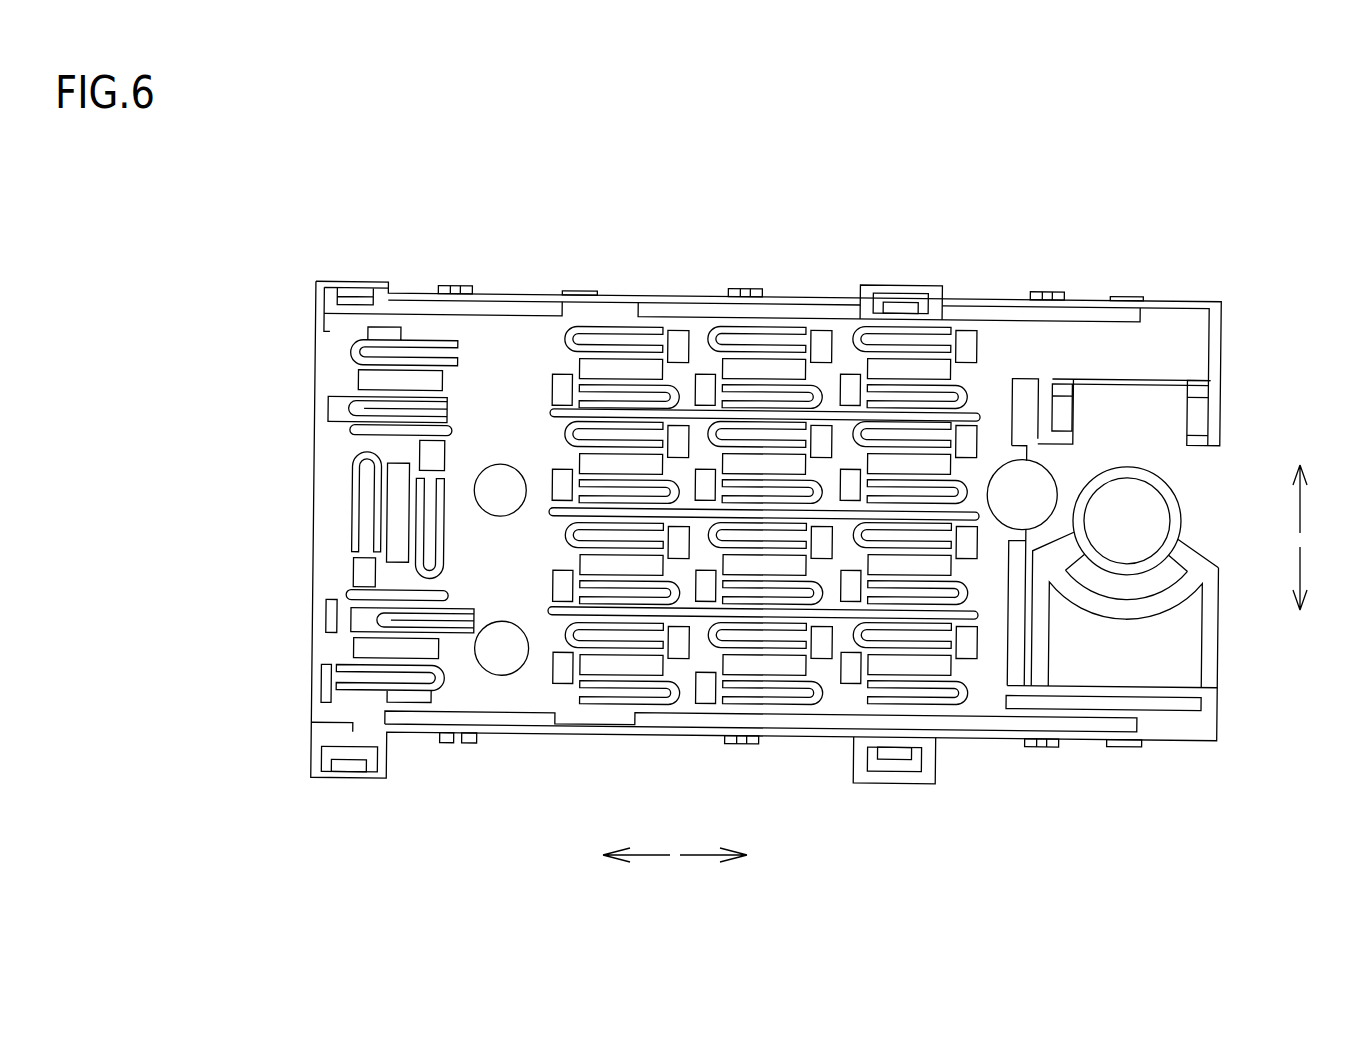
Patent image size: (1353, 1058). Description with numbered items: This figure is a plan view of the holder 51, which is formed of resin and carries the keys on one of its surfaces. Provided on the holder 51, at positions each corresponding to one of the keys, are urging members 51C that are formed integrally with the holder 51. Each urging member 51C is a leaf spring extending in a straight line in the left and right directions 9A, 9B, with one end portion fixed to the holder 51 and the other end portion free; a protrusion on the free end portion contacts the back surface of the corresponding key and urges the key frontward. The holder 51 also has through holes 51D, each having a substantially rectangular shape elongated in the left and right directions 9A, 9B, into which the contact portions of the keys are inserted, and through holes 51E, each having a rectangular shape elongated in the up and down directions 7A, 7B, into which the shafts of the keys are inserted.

The holder 51 is at (1224, 263).
The urging member 51C is at (392, 350).
The through hole 51D is at (402, 380).
The through hole 51E is at (965, 358).
The up direction 7A is at (1299, 507).
The down direction 7B is at (1299, 572).
The left direction 9A is at (644, 852).
The right direction 9B is at (706, 852).